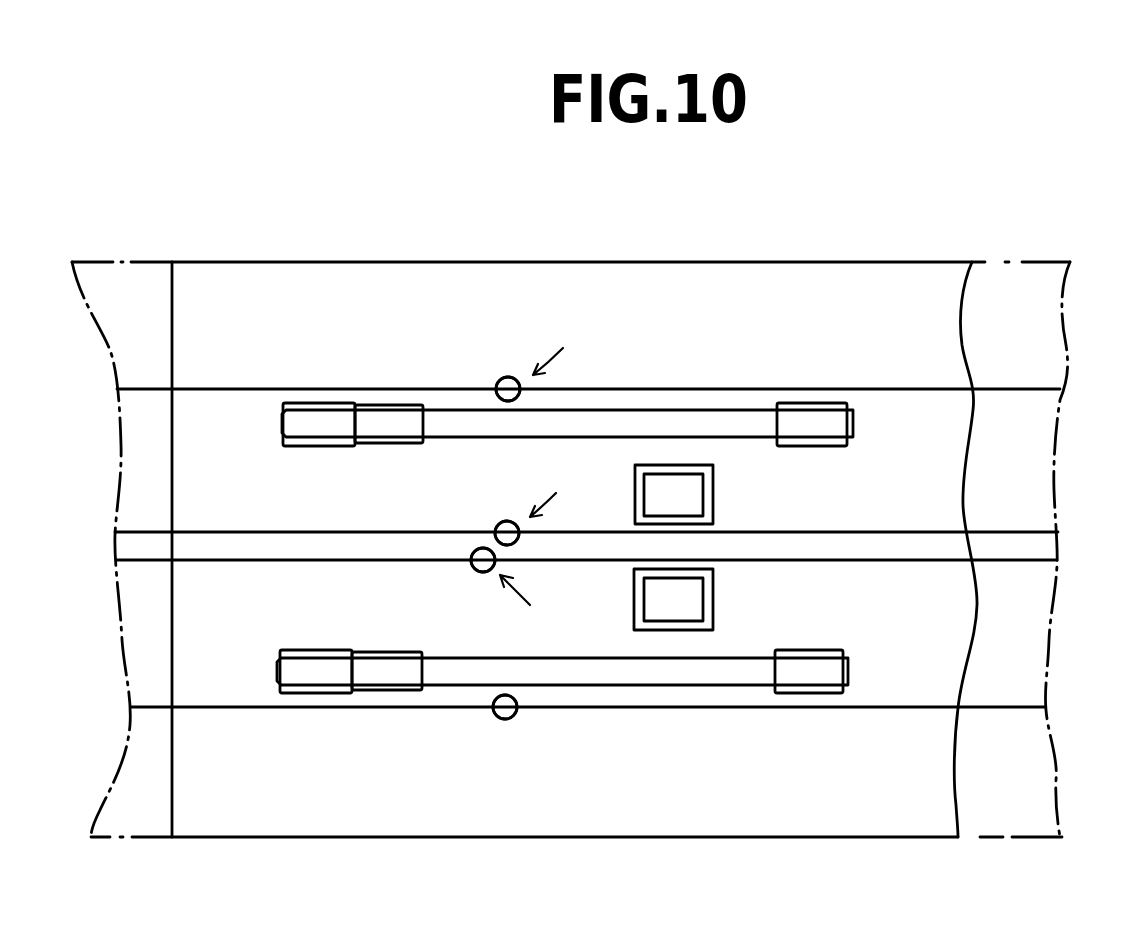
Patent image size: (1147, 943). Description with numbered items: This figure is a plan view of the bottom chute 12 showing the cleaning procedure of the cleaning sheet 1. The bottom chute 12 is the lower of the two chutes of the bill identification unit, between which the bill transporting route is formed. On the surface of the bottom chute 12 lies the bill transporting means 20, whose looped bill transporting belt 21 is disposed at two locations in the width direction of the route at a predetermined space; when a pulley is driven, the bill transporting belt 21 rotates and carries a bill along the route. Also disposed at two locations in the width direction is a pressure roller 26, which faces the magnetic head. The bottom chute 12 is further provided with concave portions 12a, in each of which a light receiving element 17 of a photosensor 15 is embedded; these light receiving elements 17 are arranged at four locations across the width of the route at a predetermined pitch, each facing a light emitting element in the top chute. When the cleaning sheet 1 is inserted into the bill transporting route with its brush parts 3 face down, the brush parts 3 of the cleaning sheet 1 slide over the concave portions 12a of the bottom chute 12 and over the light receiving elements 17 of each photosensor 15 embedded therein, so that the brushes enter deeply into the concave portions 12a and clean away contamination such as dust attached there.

The cleaning sheet 1 is at (1043, 262).
The brush parts 3 is at (1027, 389).
The bottom chute 12 is at (857, 278).
The concave portion 12a is at (497, 380).
The photosensor 15 is at (590, 344).
The light receiving element 17 is at (507, 377).
The bill transporting means 20 is at (812, 471).
The bill transporting belt 21 is at (718, 423).
The pressure roller 26 is at (688, 495).